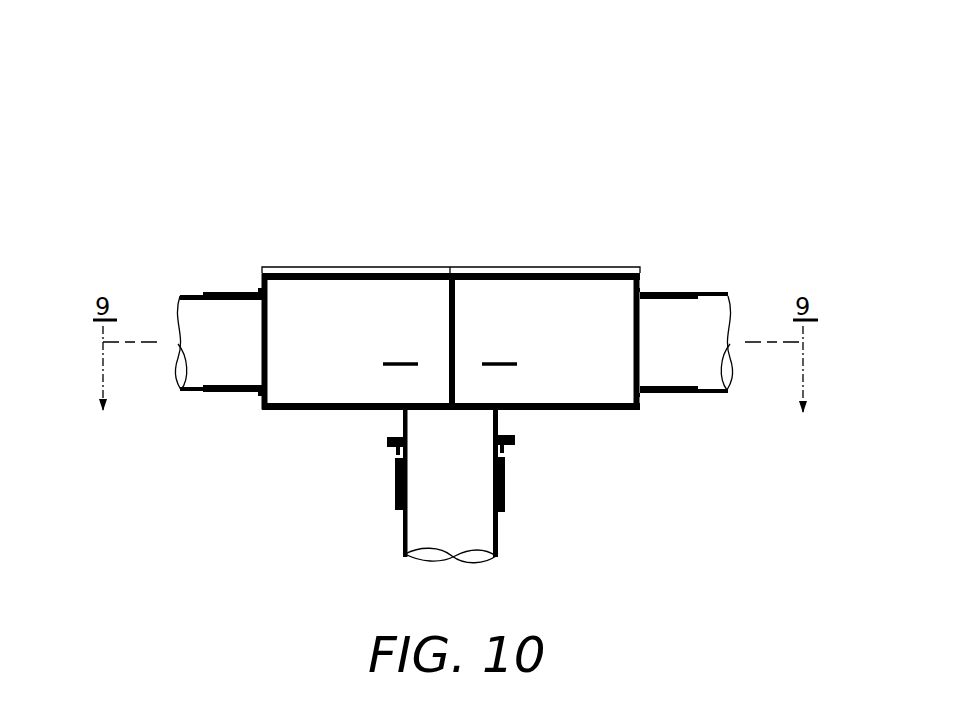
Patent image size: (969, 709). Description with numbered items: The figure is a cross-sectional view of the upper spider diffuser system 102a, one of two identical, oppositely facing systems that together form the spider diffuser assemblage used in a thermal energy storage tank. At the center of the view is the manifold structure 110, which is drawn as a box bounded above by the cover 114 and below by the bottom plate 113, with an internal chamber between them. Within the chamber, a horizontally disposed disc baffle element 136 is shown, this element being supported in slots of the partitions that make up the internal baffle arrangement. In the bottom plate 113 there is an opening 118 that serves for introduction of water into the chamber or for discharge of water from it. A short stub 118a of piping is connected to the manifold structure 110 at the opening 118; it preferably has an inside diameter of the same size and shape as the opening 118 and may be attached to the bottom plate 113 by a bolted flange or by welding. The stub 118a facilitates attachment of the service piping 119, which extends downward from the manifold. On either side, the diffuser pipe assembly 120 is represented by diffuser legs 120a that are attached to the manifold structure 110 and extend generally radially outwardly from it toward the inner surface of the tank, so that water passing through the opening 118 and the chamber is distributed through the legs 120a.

The spider diffuser system 102a is at (453, 233).
The manifold structure 110 is at (515, 233).
The cover 114 is at (402, 272).
The bottom plate 113 is at (565, 410).
The opening 118 is at (418, 405).
The disc baffle element 136 is at (497, 362).
The stub 118a is at (402, 426).
The service piping 119 is at (429, 489).
The diffuser pipe assembly 120 is at (717, 280).
The diffuser leg 120a is at (685, 320).